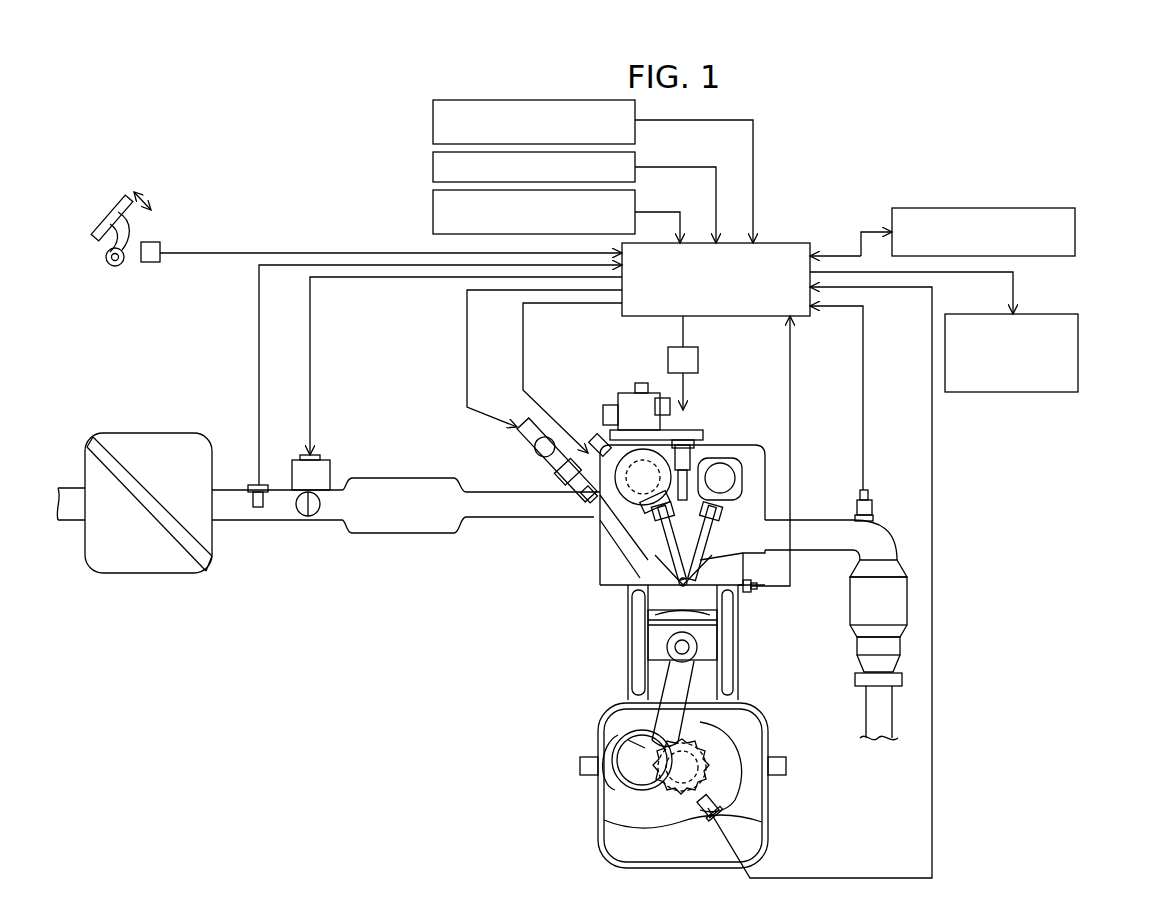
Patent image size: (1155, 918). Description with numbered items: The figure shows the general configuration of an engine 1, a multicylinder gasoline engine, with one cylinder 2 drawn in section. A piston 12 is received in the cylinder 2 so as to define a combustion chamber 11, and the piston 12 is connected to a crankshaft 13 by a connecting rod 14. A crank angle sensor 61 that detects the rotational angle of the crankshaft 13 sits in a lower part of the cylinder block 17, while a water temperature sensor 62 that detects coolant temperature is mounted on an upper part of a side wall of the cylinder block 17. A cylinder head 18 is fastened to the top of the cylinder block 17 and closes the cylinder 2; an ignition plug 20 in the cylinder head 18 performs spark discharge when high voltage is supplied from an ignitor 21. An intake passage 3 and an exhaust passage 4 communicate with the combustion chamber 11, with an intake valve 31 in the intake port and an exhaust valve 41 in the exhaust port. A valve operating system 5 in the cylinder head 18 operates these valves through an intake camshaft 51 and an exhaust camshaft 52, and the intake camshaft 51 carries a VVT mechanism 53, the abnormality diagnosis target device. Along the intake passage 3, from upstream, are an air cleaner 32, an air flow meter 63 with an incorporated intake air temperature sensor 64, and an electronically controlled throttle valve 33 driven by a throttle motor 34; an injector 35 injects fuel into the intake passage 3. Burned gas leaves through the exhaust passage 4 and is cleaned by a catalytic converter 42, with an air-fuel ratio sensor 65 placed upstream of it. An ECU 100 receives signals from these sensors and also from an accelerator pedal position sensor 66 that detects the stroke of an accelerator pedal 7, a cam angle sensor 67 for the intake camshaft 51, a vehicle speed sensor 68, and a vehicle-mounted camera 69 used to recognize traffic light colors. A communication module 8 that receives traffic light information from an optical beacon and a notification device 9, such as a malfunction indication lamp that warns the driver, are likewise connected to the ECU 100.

The engine 1 is at (487, 690).
The cylinder 2 is at (738, 690).
The intake passage 3 is at (500, 505).
The exhaust passage 4 is at (800, 540).
The valve operating system 5 is at (718, 442).
The accelerator pedal 7 is at (108, 218).
The communication module 8 is at (1075, 232).
The notification device 9 is at (1078, 352).
The combustion chamber 11 is at (636, 592).
The piston 12 is at (655, 650).
The crankshaft 13 is at (612, 820).
The connecting rod 14 is at (668, 688).
The cylinder block 17 is at (620, 630).
The cylinder head 18 is at (622, 570).
The ignition plug 20 is at (652, 604).
The ignitor 21 is at (668, 358).
The intake valve 31 is at (628, 563).
The air cleaner 32 is at (207, 568).
The throttle valve 33 is at (320, 508).
The throttle motor 34 is at (330, 468).
The injector 35 is at (540, 456).
The exhaust valve 41 is at (742, 552).
The catalytic converter 42 is at (868, 600).
The intake camshaft 51 is at (643, 470).
The exhaust camshaft 52 is at (722, 476).
The VVT mechanism 53 is at (598, 440).
The crank angle sensor 61 is at (750, 812).
The water temperature sensor 62 is at (751, 592).
The air flow meter 63 is at (253, 485).
The intake air temperature sensor 64 is at (265, 497).
The air-fuel ratio sensor 65 is at (873, 506).
The accelerator pedal position sensor 66 is at (152, 242).
The cam angle sensor 67 is at (433, 168).
The vehicle speed sensor 68 is at (433, 212).
The vehicle-mounted camera 69 is at (433, 121).
The ECU 100 is at (790, 243).